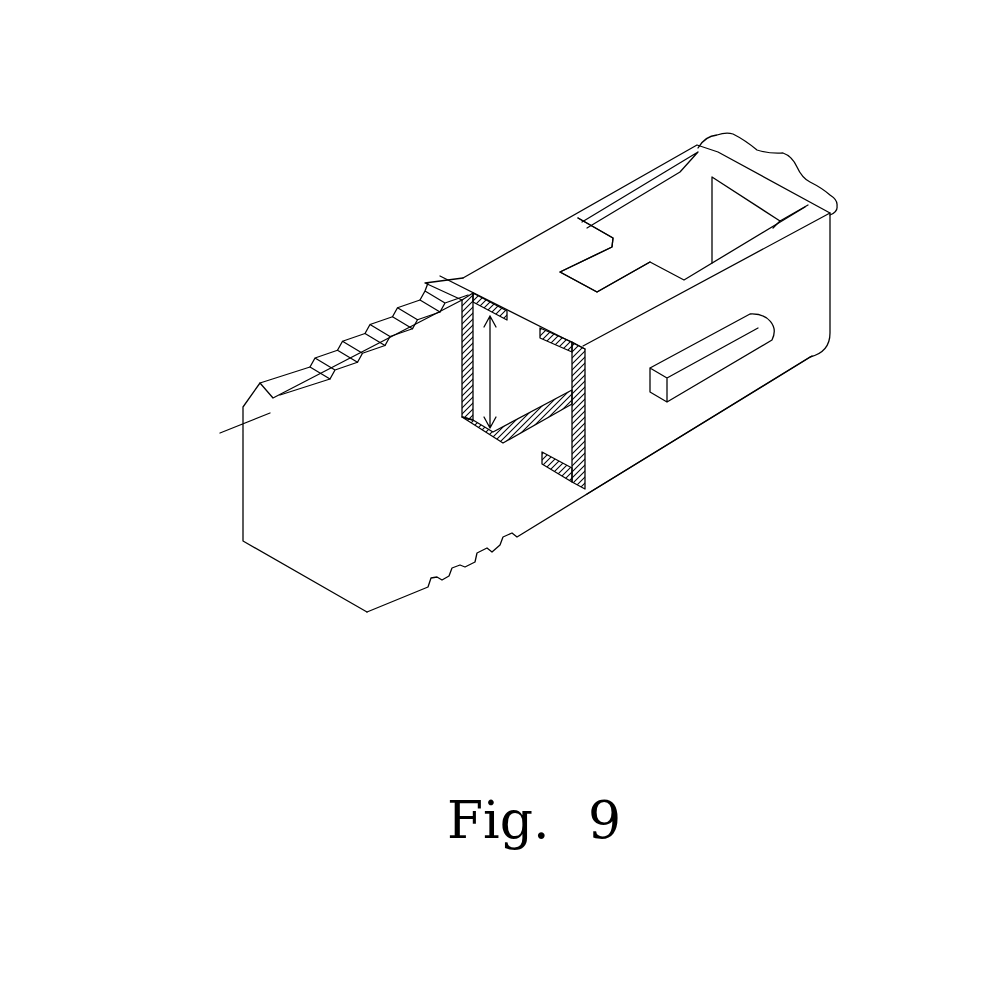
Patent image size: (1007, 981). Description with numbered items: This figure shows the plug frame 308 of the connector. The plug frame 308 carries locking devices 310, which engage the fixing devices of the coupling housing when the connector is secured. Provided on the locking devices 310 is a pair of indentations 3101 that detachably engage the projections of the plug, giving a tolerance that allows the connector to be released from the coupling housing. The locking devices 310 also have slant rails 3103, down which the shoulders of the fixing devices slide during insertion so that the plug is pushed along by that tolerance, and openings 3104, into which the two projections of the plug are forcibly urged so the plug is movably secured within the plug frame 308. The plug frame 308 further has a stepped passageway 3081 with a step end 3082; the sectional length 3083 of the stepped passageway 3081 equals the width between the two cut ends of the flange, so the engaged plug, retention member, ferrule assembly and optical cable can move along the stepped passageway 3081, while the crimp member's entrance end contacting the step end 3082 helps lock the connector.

The plug frame 308 is at (480, 207).
The stepped passageway 3081 is at (417, 393).
The step end 3082 is at (545, 470).
The sectional length 3083 is at (462, 352).
The locking devices 310 is at (767, 161).
The indentations 3101 is at (593, 277).
The slant rails 3103 is at (622, 210).
The openings 3104 is at (673, 238).